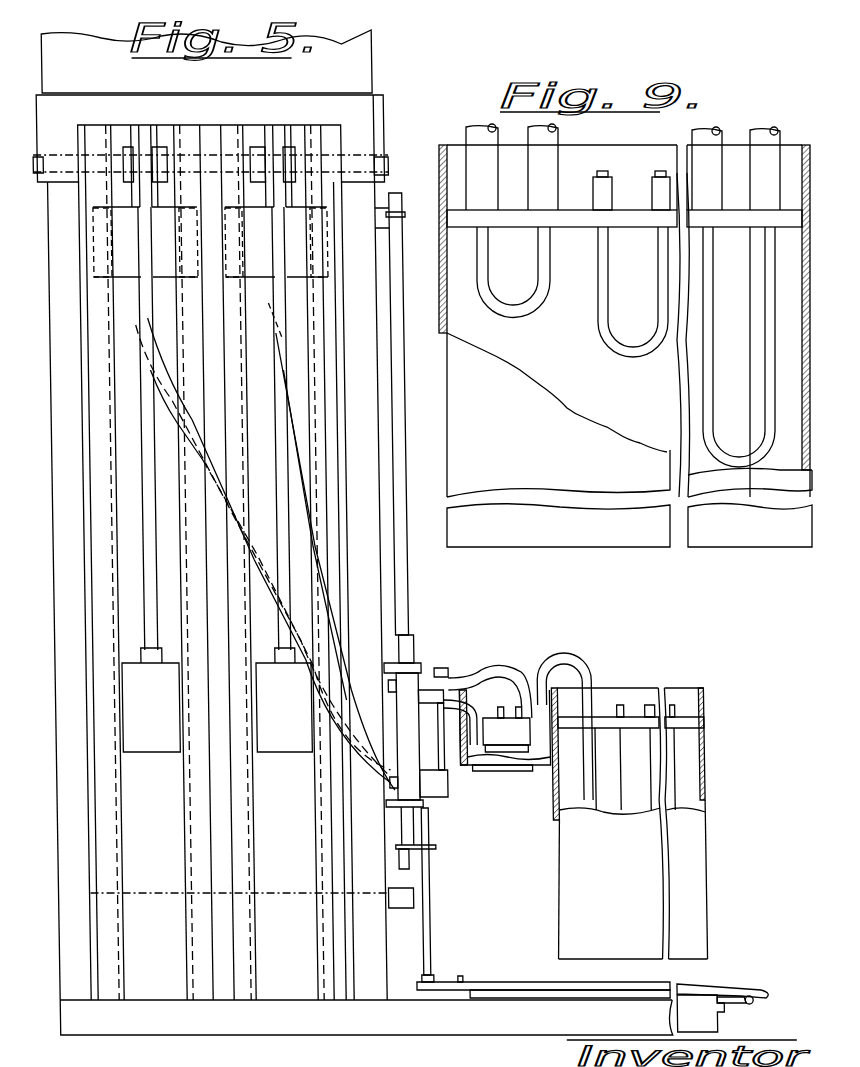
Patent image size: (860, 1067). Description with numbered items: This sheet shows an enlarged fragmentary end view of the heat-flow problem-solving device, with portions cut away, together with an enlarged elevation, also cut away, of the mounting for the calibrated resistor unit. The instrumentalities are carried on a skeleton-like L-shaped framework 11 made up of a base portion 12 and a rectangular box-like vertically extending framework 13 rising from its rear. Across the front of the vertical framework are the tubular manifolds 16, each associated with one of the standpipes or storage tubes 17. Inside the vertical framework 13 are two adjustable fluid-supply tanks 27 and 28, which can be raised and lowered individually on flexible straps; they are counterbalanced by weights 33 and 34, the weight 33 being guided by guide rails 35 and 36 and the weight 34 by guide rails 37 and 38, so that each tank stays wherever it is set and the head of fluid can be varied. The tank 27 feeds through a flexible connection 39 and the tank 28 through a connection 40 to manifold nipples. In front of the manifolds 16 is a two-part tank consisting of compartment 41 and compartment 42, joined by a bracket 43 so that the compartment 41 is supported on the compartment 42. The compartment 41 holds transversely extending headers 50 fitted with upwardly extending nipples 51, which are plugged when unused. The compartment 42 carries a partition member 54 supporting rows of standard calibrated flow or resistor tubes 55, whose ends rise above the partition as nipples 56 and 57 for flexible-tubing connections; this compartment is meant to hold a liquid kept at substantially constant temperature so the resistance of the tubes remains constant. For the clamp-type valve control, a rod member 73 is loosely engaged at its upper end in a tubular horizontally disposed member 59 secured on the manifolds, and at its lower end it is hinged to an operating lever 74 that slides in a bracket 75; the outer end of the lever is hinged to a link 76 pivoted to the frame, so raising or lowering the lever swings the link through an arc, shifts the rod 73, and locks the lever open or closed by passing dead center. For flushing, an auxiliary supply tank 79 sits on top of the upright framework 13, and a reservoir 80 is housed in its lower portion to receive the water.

In FIG. 5, the framework 11 is at (152, 1037).
In FIG. 5, the base portion 12 is at (342, 1020).
In FIG. 5, the vertically extending framework 13 is at (395, 468).
In FIG. 5, the manifold 16 is at (402, 752).
In FIG. 5, the standpipe 17 is at (405, 585).
In FIG. 5, the adjustable tank 27 is at (120, 267).
In FIG. 5, the adjustable tank 28 is at (262, 265).
In FIG. 5, the weight 33 is at (170, 730).
In FIG. 5, the weight 34 is at (300, 728).
In FIG. 5, the guide rail 35 is at (112, 515).
In FIG. 5, the guide rail 36 is at (188, 517).
In FIG. 5, the guide rail 37 is at (238, 488).
In FIG. 5, the guide rail 38 is at (328, 458).
In FIG. 5, the flexible connection 39 is at (217, 470).
In FIG. 5, the connection 40 is at (295, 413).
In FIG. 5, the compartment 41 is at (492, 780).
In FIG. 5, the compartment 42 is at (708, 768).
In FIG. 9, the compartment 42 is at (447, 280).
In FIG. 5, the bracket 43 is at (506, 771).
In FIG. 5, the header 50 is at (507, 735).
In FIG. 5, the nipple 51 is at (500, 705).
In FIG. 5, the partition member 54 is at (687, 720).
In FIG. 9, the partition member 54 is at (727, 222).
In FIG. 5, the calibrated flow or resistor tube 55 is at (592, 790).
In FIG. 9, the calibrated flow or resistor tube 55 is at (545, 283).
In FIG. 5, the nipple 56 is at (618, 705).
In FIG. 9, the nipple 56 is at (593, 190).
In FIG. 9, the nipple 57 is at (655, 190).
In FIG. 5, the tubular horizontally disposed member 59 is at (438, 788).
In FIG. 5, the rod member 73 is at (428, 900).
In FIG. 5, the operating lever 74 is at (488, 982).
In FIG. 5, the bracket 75 is at (456, 978).
In FIG. 5, the link 76 is at (743, 1004).
In FIG. 5, the auxiliary supply tank 79 is at (367, 70).
In FIG. 5, the reservoir 80 is at (150, 893).